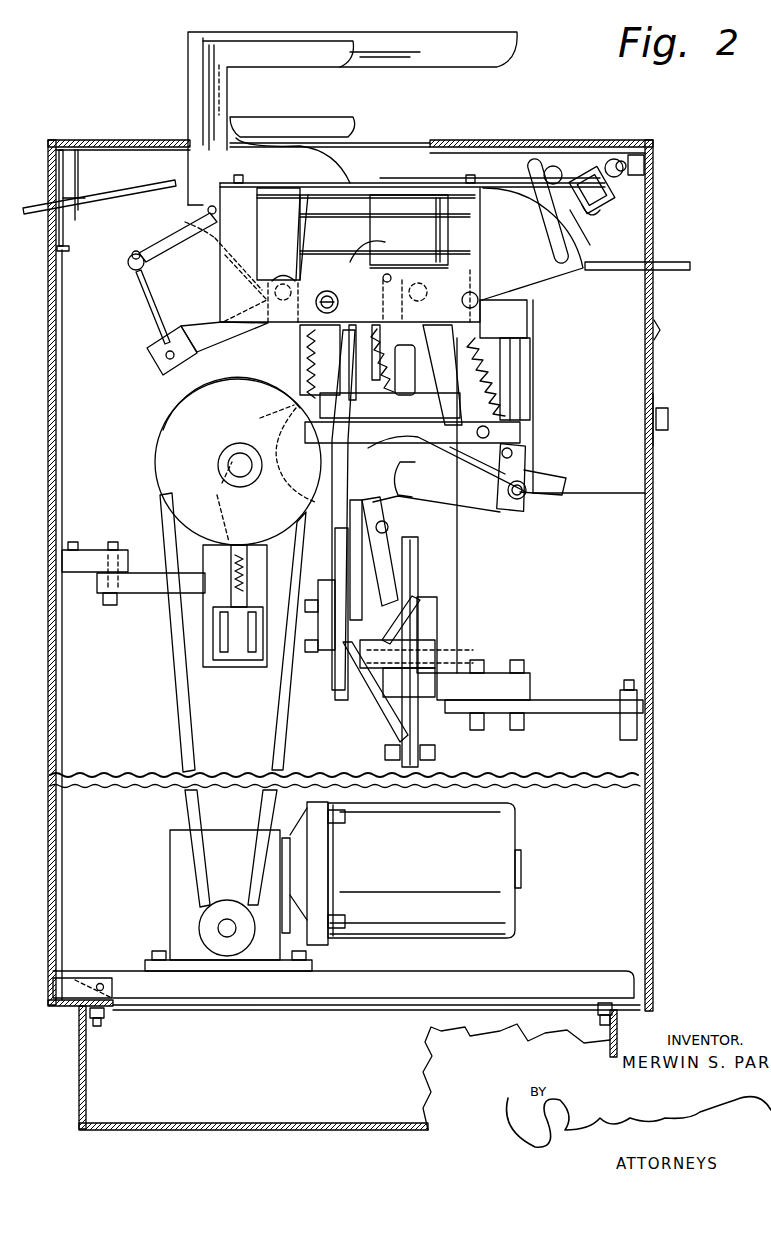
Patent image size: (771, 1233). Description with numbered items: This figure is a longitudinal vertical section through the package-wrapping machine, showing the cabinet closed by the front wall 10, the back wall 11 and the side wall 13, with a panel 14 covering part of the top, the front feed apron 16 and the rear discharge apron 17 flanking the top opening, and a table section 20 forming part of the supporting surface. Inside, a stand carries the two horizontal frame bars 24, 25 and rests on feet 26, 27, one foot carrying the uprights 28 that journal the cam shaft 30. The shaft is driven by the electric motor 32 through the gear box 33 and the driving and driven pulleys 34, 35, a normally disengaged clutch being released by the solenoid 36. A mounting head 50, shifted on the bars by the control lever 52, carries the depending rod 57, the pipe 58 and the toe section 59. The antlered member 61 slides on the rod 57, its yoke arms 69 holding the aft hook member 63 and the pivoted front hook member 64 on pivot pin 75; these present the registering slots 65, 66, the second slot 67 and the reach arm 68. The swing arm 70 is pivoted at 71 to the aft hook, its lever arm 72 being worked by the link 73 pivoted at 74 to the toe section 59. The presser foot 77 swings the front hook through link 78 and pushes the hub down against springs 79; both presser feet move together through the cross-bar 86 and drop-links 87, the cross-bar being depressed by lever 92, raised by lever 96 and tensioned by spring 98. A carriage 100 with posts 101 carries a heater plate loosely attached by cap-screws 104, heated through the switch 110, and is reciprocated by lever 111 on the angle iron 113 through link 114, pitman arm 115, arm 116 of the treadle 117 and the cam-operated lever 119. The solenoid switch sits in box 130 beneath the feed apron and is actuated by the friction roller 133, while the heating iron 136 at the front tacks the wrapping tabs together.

The front wall 10 is at (652, 596).
The back wall 11 is at (49, 476).
The side wall 13 is at (89, 686).
The panel 14 is at (121, 140).
The front apron 16 is at (600, 160).
The rear apron 17 is at (114, 197).
The table section 20 is at (411, 172).
The horizontal bar 24 is at (505, 290).
The horizontal bar 25 is at (339, 302).
The foot 26 is at (535, 682).
The foot 27 is at (145, 585).
The uprights 28 is at (260, 418).
The cam shaft 30 is at (230, 465).
The electric motor 32 is at (385, 928).
The gear box 33 is at (172, 880).
The driving pulley 34 is at (230, 905).
The driven pulley 35 is at (170, 440).
The solenoid 36 is at (238, 648).
The mounting head 50 is at (518, 328).
The control lever 52 is at (612, 262).
The rod 57 is at (352, 550).
The pipe 58 is at (512, 383).
The toe section 59 is at (176, 337).
The antlered member 61 is at (413, 408).
The aft hook member 63 is at (188, 63).
The front hook member 64 is at (528, 300).
The horizontal slot 65 is at (276, 137).
The horizontal slot 66 is at (550, 250).
The second horizontal slot 67 is at (370, 75).
The reach arm 68 is at (450, 44).
The yoke arms 69 is at (162, 360).
The swing arm 70 is at (193, 112).
The pivot 71 is at (207, 210).
The lever arm 72 is at (174, 244).
The link 73 is at (155, 318).
The pivot 74 is at (130, 270).
The pivot pin 75 is at (460, 302).
The presser foot 77 is at (518, 430).
The link 78 is at (385, 335).
The springs 79 is at (392, 370).
The cross-bar 86 is at (512, 498).
The drop-links 87 is at (520, 460).
The lever 92 is at (556, 480).
The lever 96 is at (450, 478).
The spring 98 is at (484, 384).
The carriage 100 is at (358, 294).
The posts 101 is at (242, 237).
The cap-screws 104 is at (240, 175).
The switch 110 is at (660, 332).
The lever 111 is at (342, 468).
The angle iron 113 is at (332, 632).
The link 114 is at (308, 356).
The pitman arm 115 is at (400, 615).
The arm 116 is at (410, 712).
The double-levered treadle 117 is at (412, 683).
The cam-operated lever 119 is at (392, 521).
The box 130 is at (592, 195).
The roller 133 is at (620, 160).
The heating iron 136 is at (556, 166).